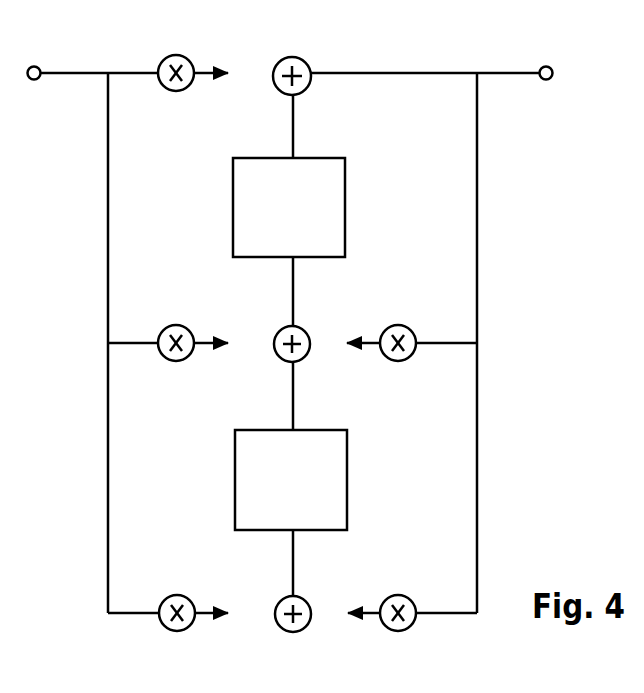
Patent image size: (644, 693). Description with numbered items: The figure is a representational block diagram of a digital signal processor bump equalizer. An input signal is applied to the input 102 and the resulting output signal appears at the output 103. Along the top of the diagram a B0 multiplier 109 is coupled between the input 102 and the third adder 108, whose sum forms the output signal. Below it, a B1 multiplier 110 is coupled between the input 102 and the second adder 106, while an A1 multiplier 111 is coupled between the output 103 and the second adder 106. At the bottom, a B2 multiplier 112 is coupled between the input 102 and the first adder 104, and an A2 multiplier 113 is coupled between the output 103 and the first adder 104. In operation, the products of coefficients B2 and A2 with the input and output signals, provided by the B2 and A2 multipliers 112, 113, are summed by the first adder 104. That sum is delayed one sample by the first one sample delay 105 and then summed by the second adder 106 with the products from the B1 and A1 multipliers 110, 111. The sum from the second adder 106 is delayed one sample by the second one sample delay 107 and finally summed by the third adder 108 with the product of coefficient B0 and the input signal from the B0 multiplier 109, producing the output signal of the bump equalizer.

The input 102 is at (36, 66).
The output 103 is at (546, 66).
The first adder 104 is at (291, 632).
The first one sample delay 105 is at (347, 497).
The second adder 106 is at (296, 327).
The second one sample delay 107 is at (345, 222).
The third adder 108 is at (306, 63).
The B0 multiplier 109 is at (174, 91).
The B1 multiplier 110 is at (172, 361).
The A1 multiplier 111 is at (395, 361).
The B2 multiplier 112 is at (173, 631).
The A2 multiplier 113 is at (395, 631).